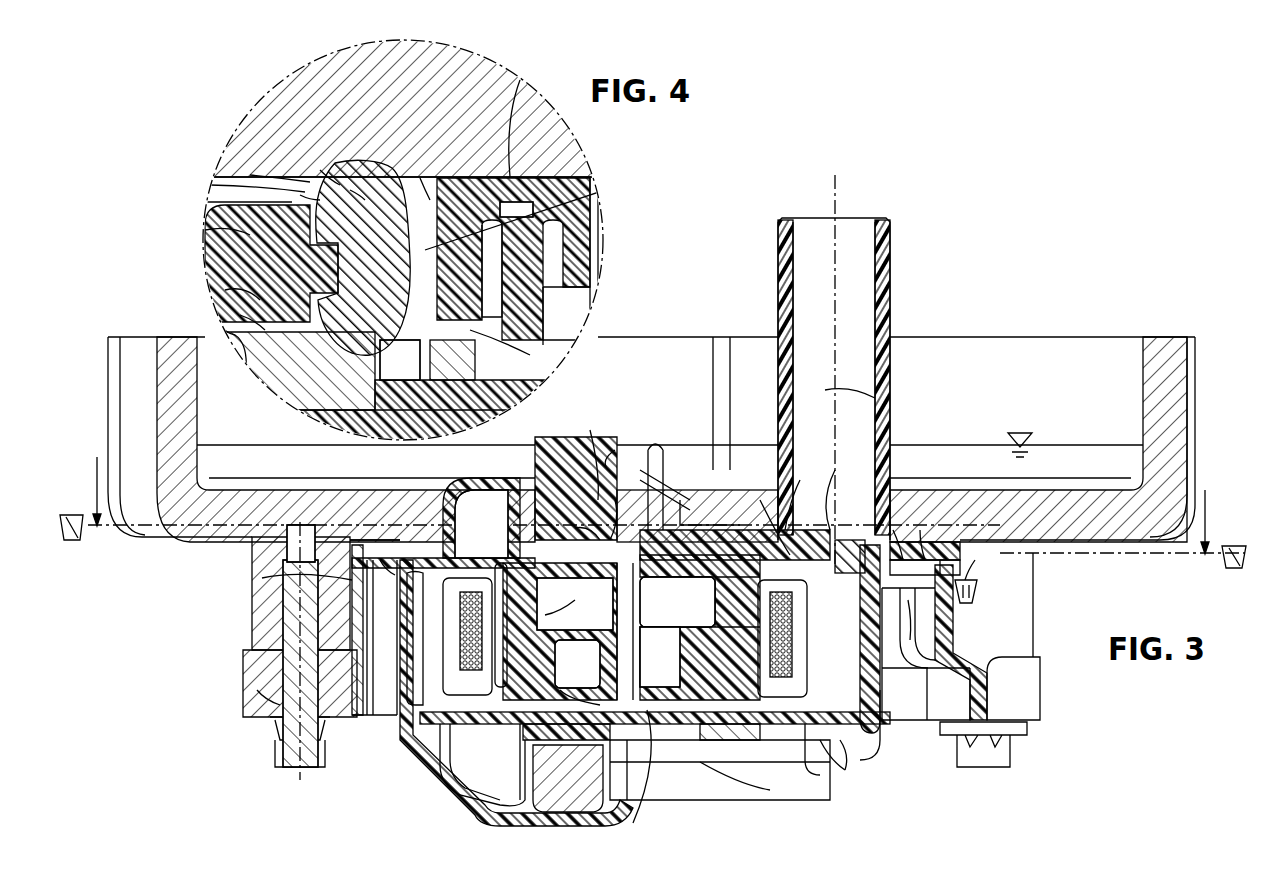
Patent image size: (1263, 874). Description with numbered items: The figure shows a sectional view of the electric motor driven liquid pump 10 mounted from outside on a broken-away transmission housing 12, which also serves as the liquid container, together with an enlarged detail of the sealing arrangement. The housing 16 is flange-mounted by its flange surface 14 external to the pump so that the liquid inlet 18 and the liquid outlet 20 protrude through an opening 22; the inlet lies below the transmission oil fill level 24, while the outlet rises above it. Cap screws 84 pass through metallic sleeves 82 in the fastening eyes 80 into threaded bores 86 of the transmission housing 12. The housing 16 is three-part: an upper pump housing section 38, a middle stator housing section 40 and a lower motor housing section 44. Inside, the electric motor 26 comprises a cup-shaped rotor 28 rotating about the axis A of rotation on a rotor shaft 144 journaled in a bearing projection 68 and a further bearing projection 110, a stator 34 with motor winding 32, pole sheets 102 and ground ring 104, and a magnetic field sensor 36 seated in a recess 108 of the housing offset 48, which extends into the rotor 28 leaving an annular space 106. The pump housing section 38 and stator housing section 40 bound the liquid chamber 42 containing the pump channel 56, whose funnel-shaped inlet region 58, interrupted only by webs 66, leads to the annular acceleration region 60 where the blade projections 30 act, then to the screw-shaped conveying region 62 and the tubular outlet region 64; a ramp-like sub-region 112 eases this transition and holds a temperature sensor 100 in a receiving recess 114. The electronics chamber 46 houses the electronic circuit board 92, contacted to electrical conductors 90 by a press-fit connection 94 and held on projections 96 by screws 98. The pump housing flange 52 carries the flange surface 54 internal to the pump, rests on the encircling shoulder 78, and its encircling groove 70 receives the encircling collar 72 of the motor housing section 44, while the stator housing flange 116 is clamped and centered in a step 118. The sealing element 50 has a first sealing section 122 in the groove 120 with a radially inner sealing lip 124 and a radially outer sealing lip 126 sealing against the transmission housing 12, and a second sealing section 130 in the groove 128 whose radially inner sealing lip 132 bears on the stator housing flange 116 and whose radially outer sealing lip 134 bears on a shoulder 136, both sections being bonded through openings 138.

In FIG. 3, the liquid pump 10 is at (845, 760).
In FIG. 3, the transmission housing 12 is at (1170, 340).
In FIG. 4, the transmission housing 12 is at (515, 90).
In FIG. 3, the flange surface external to the pump 14 is at (930, 560).
In FIG. 4, the flange surface external to the pump 14 is at (575, 178).
In FIG. 3, the housing 16 is at (430, 778).
In FIG. 4, the housing 16 is at (595, 250).
In FIG. 3, the liquid inlet 18 is at (670, 470).
In FIG. 3, the liquid outlet 20 is at (855, 230).
In FIG. 3, the opening 22 is at (910, 540).
In FIG. 3, the transmission oil fill level 24 is at (1050, 445).
In FIG. 3, the electric motor 26 is at (420, 720).
In FIG. 3, the rotor 28 is at (700, 605).
In FIG. 3, the blade projections 30 is at (670, 525).
In FIG. 3, the motor winding 32 is at (458, 620).
In FIG. 3, the stator 34 is at (786, 515).
In FIG. 3, the magnetic field sensor 36 is at (705, 650).
In FIG. 3, the pump housing section 38 is at (565, 437).
In FIG. 4, the pump housing section 38 is at (205, 230).
In FIG. 3, the stator housing section 40 is at (910, 628).
In FIG. 4, the stator housing section 40 is at (230, 345).
In FIG. 3, the liquid chamber 42 is at (690, 500).
In FIG. 3, the motor housing section 44 is at (700, 762).
In FIG. 4, the motor housing section 44 is at (530, 345).
In FIG. 3, the electronics chamber 46 is at (425, 760).
In FIG. 3, the housing offset 48 is at (577, 664).
In FIG. 3, the sealing element 50 is at (365, 545).
In FIG. 4, the sealing element 50 is at (300, 195).
In FIG. 3, the pump housing flange 52 is at (374, 630).
In FIG. 4, the pump housing flange 52 is at (520, 80).
In FIG. 3, the flange surface internal to the pump 54 is at (920, 626).
In FIG. 4, the flange surface internal to the pump 54 is at (240, 315).
In FIG. 3, the pump channel 56 is at (895, 530).
In FIG. 3, the inlet region 58 is at (658, 450).
In FIG. 3, the acceleration region 60 is at (720, 460).
In FIG. 3, the conveying region 62 is at (490, 517).
In FIG. 3, the outlet region 64 is at (875, 398).
In FIG. 3, the webs 66 is at (590, 430).
In FIG. 3, the bearing projection 68 is at (575, 604).
In FIG. 3, the encircling groove 70 is at (975, 560).
In FIG. 4, the encircling groove 70 is at (520, 250).
In FIG. 3, the encircling collar 72 is at (950, 560).
In FIG. 4, the encircling collar 72 is at (553, 270).
In FIG. 4, the encircling shoulder 78 is at (530, 355).
In FIG. 3, the fastening eyes 80 is at (1020, 715).
In FIG. 3, the metallic sleeve 82 is at (257, 690).
In FIG. 3, the cap screws 84 is at (985, 767).
In FIG. 3, the threaded bores 86 is at (283, 610).
In FIG. 3, the electrical conductors 90 is at (880, 730).
In FIG. 3, the electronic circuit board 92 is at (480, 780).
In FIG. 3, the press-fit connection 94 is at (812, 760).
In FIG. 3, the projections 96 is at (650, 790).
In FIG. 3, the screws 98 is at (650, 760).
In FIG. 3, the temperature sensor 100 is at (850, 540).
In FIG. 3, the pole sheets 102 is at (575, 607).
In FIG. 3, the ground ring 104 is at (793, 610).
In FIG. 3, the annular space 106 is at (580, 692).
In FIG. 3, the recess 108 is at (725, 760).
In FIG. 3, the bearing projection 110 is at (530, 760).
In FIG. 3, the sub-region 112 is at (835, 470).
In FIG. 3, the receiving recess 114 is at (920, 530).
In FIG. 3, the stator housing flange 116 is at (947, 605).
In FIG. 4, the stator housing flange 116 is at (225, 290).
In FIG. 3, the step 118 is at (262, 578).
In FIG. 4, the step 118 is at (300, 412).
In FIG. 4, the encircling groove 120 is at (250, 175).
In FIG. 4, the first sealing section 122 is at (350, 190).
In FIG. 4, the radially inner sealing lip 124 is at (320, 170).
In FIG. 4, the radially outer sealing lip 126 is at (360, 163).
In FIG. 4, the encircling groove 128 is at (205, 245).
In FIG. 4, the second sealing section 130 is at (290, 385).
In FIG. 4, the radially inner sealing lip 132 is at (400, 380).
In FIG. 4, the radially outer sealing lip 134 is at (460, 380).
In FIG. 4, the shoulder 136 is at (420, 178).
In FIG. 4, the openings 138 is at (536, 206).
In FIG. 3, the rotor shaft 144 is at (647, 631).
In FIG. 3, the axis of rotation A is at (615, 450).